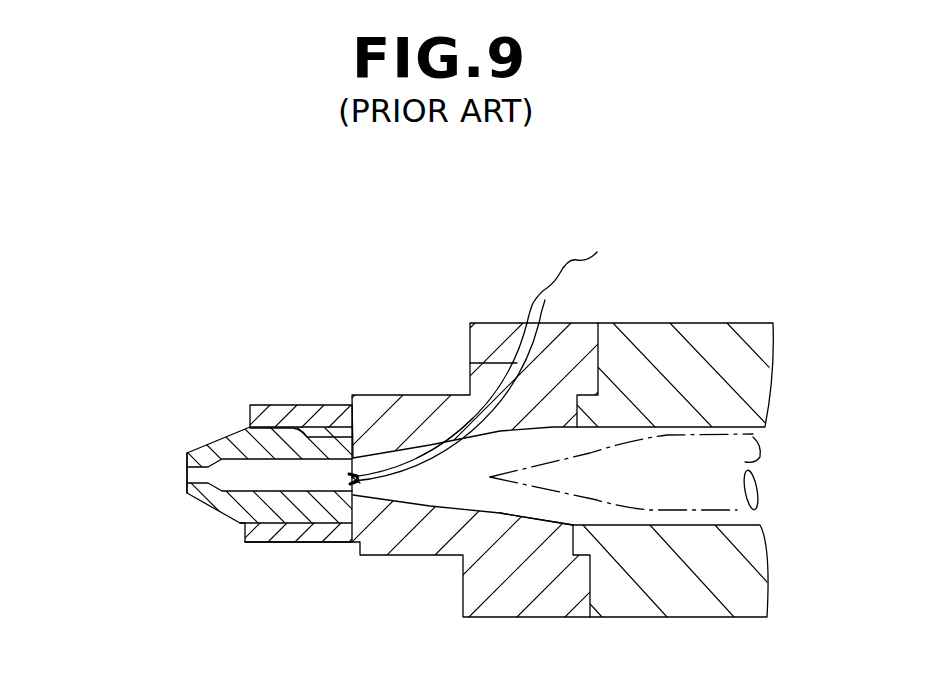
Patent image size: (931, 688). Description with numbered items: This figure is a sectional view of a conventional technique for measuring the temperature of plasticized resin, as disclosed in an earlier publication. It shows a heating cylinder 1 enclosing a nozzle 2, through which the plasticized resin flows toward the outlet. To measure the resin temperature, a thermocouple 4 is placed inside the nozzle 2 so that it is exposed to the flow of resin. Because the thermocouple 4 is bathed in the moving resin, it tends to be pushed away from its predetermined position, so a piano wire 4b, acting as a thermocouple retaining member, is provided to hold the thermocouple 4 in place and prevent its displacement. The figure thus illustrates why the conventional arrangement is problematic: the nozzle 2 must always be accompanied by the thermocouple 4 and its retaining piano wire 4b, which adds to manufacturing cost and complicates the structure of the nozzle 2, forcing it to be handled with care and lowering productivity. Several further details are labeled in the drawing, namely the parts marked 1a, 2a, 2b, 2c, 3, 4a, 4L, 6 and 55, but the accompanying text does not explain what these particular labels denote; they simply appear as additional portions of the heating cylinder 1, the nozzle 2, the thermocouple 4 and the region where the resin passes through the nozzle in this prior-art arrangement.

The heating cylinder 1 is at (698, 335).
The passage surface 1a is at (447, 515).
The nozzle 2 is at (337, 587).
The nozzle flange 2a is at (325, 437).
The nozzle lower flange 2b is at (287, 512).
The nozzle orifice 2c is at (187, 478).
The housing member 3 is at (470, 355).
The thermocouple 4 is at (425, 452).
The leaf member portion 4a is at (465, 450).
The piano wire 4b is at (397, 530).
The leaf member free end 4L is at (577, 247).
The spray 6 is at (783, 458).
The passage 55 is at (522, 503).